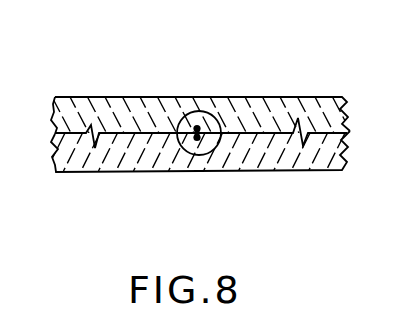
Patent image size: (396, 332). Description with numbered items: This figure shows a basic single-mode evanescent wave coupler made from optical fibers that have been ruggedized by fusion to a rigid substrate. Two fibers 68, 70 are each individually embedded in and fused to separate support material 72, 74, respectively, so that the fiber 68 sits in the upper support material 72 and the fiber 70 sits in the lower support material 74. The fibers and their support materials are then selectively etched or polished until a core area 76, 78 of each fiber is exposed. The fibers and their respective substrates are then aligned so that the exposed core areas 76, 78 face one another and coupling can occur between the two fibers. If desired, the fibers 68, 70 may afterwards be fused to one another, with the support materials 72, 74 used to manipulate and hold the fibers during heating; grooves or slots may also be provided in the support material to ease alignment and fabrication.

The fiber 68 is at (207, 120).
The fiber 70 is at (195, 141).
The support material 72 is at (276, 99).
The support material 74 is at (297, 160).
The core area 76 is at (196, 126).
The core area 78 is at (203, 148).